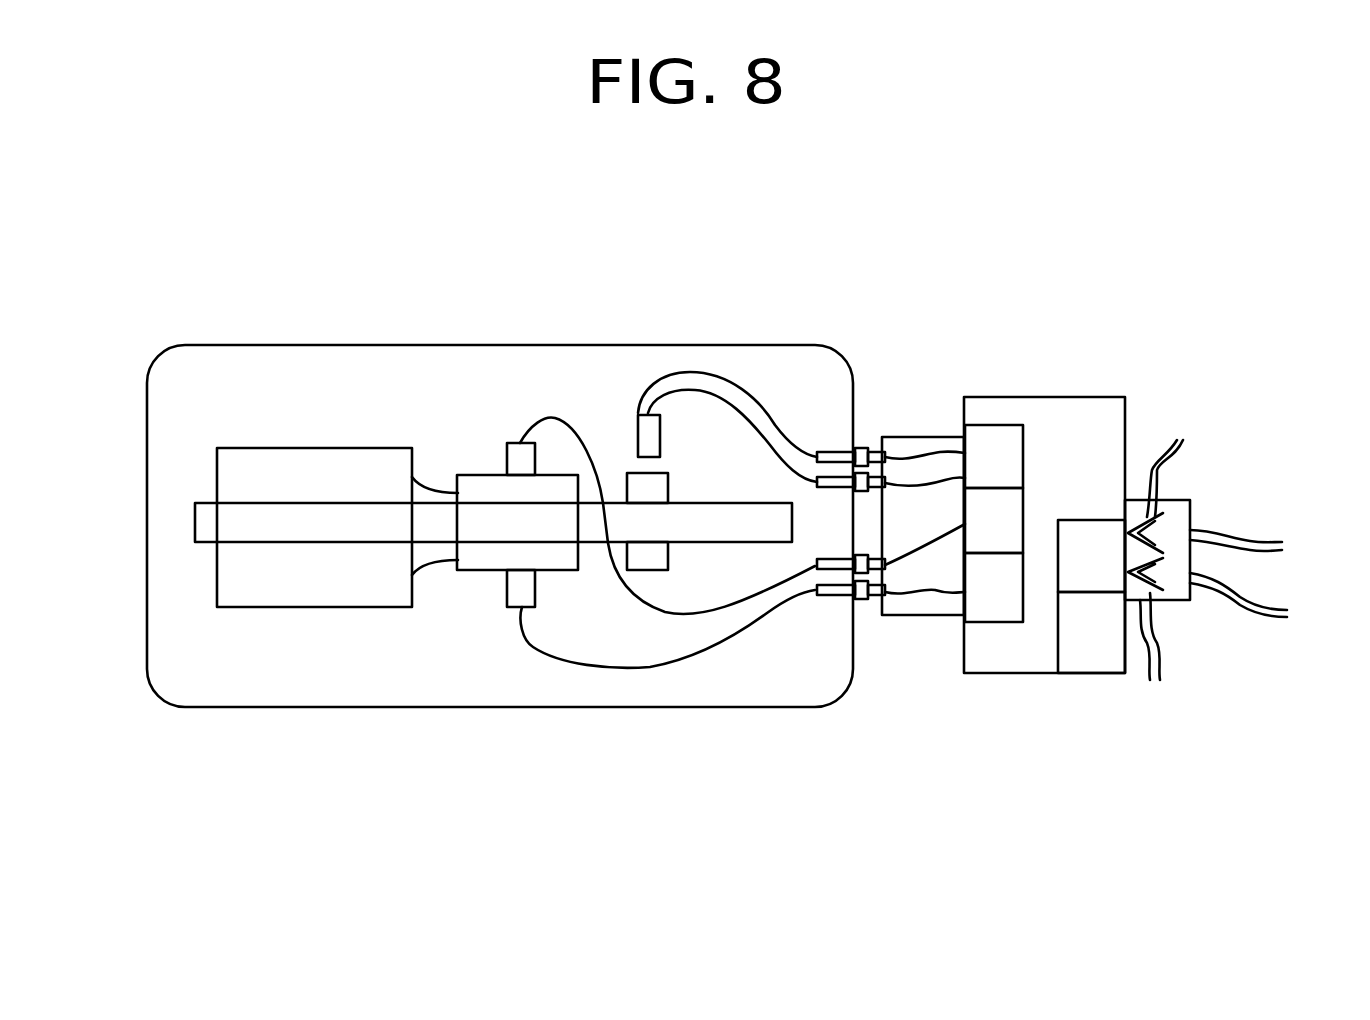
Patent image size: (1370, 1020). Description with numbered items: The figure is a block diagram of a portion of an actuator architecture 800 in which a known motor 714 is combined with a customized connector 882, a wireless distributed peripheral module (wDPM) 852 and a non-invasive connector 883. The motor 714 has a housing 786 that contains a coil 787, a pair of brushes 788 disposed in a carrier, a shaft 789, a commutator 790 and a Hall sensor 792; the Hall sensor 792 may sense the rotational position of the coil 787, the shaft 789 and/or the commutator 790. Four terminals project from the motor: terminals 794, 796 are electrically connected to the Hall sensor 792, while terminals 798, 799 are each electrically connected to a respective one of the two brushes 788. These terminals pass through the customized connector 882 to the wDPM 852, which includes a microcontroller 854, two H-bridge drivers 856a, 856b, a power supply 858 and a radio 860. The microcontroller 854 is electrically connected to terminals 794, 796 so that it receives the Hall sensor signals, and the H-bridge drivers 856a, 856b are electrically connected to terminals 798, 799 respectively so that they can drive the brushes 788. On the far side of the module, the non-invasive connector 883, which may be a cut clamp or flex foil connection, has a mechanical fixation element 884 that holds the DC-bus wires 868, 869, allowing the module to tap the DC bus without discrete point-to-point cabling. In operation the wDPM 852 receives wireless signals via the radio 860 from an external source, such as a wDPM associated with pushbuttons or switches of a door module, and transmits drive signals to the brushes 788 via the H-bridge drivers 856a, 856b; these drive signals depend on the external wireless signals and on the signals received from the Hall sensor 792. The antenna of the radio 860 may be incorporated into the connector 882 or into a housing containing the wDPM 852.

The motor 714 is at (322, 782).
The housing 786 is at (268, 345).
The coil 787 is at (313, 608).
The brushes 788 is at (507, 455).
The shaft 789 is at (217, 532).
The commutator 790 is at (487, 574).
The Hall sensor 792 is at (638, 430).
The terminal 794 is at (858, 448).
The terminal 796 is at (862, 492).
The terminal 798 is at (865, 556).
The terminal 799 is at (858, 600).
The actuator architecture 800 is at (1170, 121).
The wireless distributed peripheral module (wDPM) 852 is at (1055, 397).
The microcontroller 854 is at (1015, 477).
The H-bridge driver 856a is at (994, 520).
The H-bridge driver 856b is at (994, 587).
The power supply 858 is at (1112, 575).
The radio 860 is at (1112, 646).
The DC-bus wire 868 is at (1165, 653).
The DC-bus wire 869 is at (1167, 457).
The customized connector 882 is at (916, 437).
The non-invasive connector 883 is at (1163, 512).
The mechanical fixation element 884 is at (1190, 515).